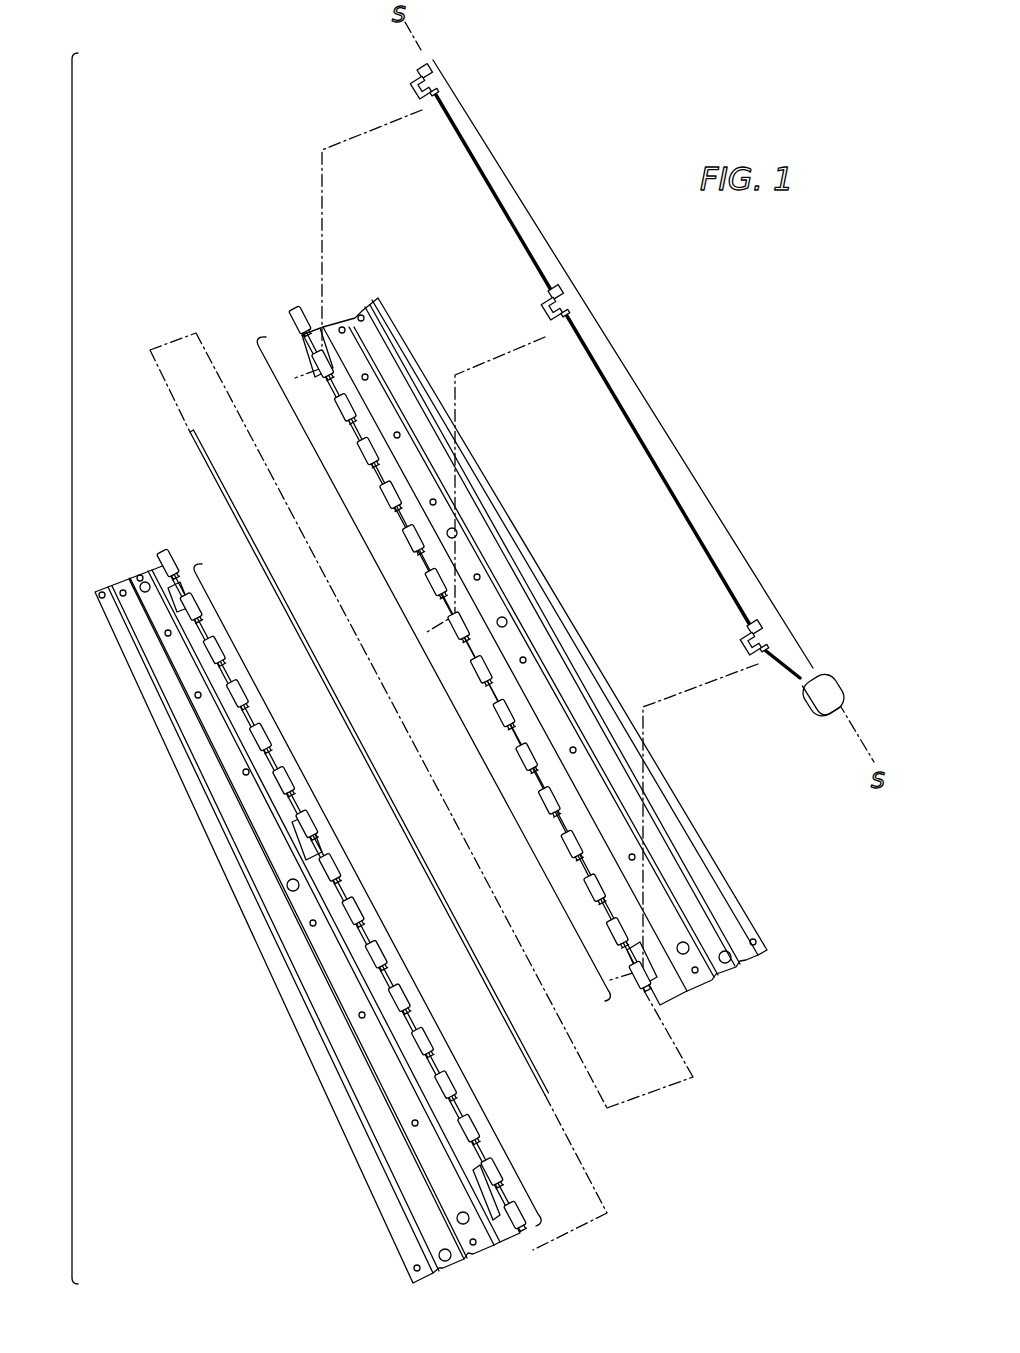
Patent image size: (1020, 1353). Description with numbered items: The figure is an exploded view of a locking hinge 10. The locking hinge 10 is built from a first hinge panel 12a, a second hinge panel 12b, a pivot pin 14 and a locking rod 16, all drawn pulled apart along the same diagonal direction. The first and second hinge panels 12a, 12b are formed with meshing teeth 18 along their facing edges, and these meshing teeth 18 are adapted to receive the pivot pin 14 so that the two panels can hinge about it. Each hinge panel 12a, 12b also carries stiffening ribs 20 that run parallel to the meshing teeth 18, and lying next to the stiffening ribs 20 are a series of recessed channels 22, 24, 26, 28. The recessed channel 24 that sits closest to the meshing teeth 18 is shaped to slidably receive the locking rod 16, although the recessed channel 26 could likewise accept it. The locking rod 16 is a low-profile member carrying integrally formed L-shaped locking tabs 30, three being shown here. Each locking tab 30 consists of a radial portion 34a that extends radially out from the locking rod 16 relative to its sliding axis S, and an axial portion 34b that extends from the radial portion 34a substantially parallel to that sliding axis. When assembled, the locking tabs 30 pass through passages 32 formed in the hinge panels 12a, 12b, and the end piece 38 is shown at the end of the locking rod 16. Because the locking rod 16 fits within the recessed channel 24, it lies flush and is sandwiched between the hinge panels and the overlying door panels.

The locking hinge 10 is at (72, 593).
The first hinge panel 12a is at (428, 782).
The second hinge panel 12b is at (307, 924).
The pivot pin 14 is at (205, 466).
The locking rod 16 is at (636, 380).
The meshing teeth 18 is at (433, 663).
The stiffening ribs 20 is at (378, 322).
The recessed channel 22 is at (400, 400).
The recessed channel 24 is at (540, 620).
The recessed channel 26 is at (222, 703).
The recessed channel 28 is at (205, 757).
The L-shaped locking tab 30 is at (583, 373).
The passages 32 is at (327, 333).
The radial portion 34a is at (432, 100).
The axial portion 34b is at (564, 392).
The end cap 38 is at (826, 682).